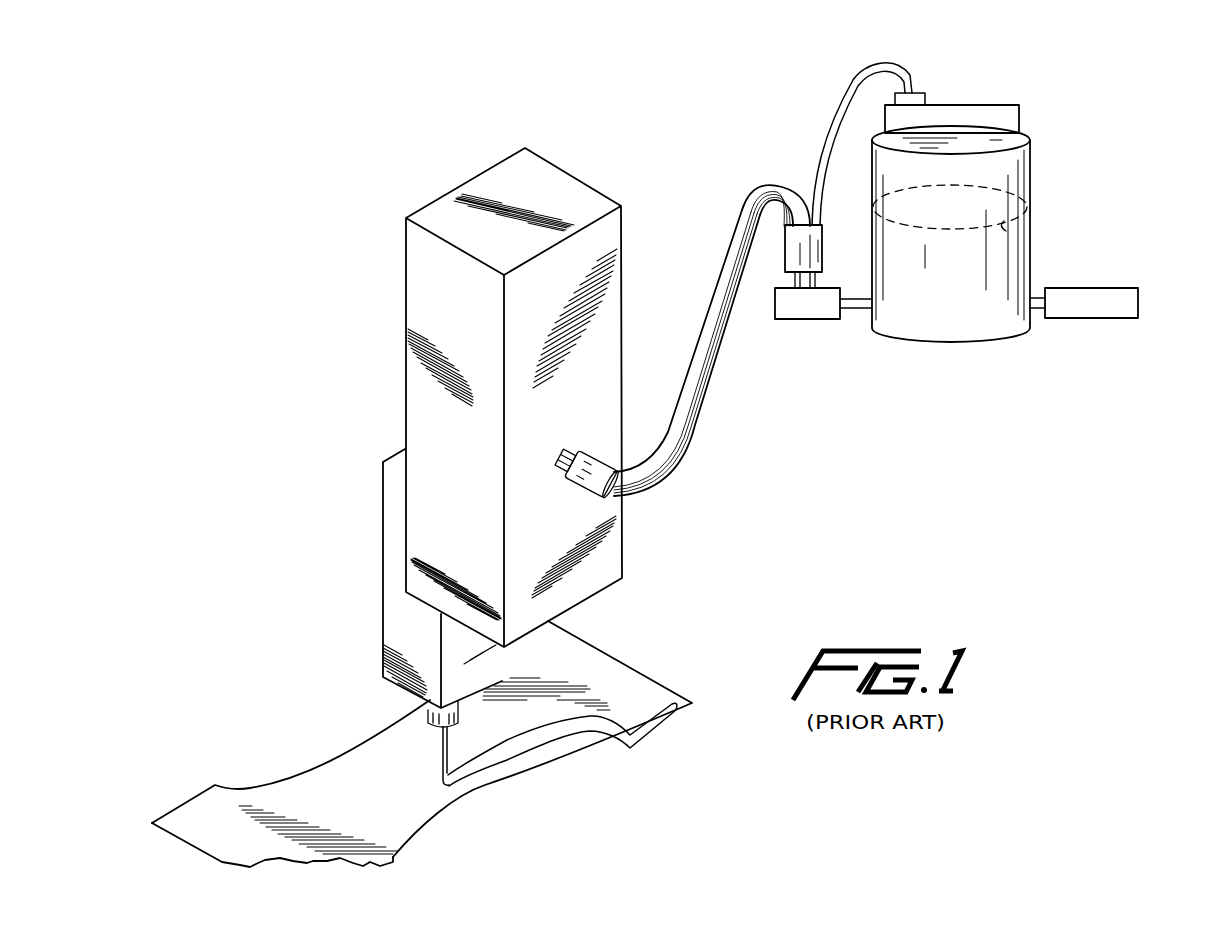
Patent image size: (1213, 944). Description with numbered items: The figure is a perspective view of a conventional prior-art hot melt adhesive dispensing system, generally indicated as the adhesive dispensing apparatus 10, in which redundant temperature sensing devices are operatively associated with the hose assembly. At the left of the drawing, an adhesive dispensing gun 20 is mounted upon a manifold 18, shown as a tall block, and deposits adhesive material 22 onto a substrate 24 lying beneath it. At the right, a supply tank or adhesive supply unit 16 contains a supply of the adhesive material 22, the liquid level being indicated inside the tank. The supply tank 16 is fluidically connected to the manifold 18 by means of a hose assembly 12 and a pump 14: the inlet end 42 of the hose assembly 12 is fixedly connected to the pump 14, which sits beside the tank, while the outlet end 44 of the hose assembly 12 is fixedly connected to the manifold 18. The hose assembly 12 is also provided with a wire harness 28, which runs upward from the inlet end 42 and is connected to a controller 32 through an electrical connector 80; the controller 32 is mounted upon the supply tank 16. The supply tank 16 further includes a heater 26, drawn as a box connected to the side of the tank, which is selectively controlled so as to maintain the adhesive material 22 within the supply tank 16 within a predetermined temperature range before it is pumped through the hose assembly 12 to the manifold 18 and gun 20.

The adhesive dispensing apparatus 10 is at (704, 124).
The hose assembly 12 is at (706, 320).
The pump 14 is at (807, 321).
The supply tank or adhesive supply unit (ASU) 16 is at (1031, 163).
The manifold 18 is at (592, 188).
The adhesive dispensing gun 20 is at (381, 580).
The adhesive material 22 is at (444, 750).
The substrate 24 is at (357, 750).
The heater 26 is at (1121, 288).
The wire harness 28 is at (810, 149).
The controller 32 is at (1009, 104).
The inlet end 42 is at (815, 282).
The outlet end 44 is at (566, 452).
The electrical connector 80 is at (926, 86).